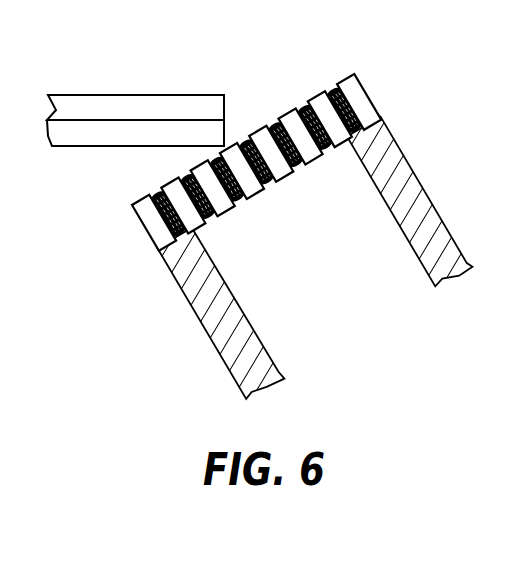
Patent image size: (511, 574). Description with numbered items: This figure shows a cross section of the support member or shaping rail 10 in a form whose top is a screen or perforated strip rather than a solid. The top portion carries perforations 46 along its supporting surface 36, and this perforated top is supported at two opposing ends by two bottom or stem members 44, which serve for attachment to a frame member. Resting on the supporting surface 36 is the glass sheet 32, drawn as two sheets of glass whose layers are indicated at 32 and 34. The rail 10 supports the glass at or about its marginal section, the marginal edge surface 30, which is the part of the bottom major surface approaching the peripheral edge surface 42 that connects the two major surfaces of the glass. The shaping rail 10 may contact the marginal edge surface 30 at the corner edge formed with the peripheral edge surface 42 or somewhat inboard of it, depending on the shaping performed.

The shaping rail 10 is at (378, 305).
The marginal edge surface 30 is at (203, 152).
The glass sheet 32 is at (88, 104).
The lower plate layer 34 is at (83, 137).
The supporting surface 36 is at (314, 92).
The peripheral edge surface 42 is at (228, 103).
The stem member 44 is at (200, 325).
The perforations 46 is at (280, 125).